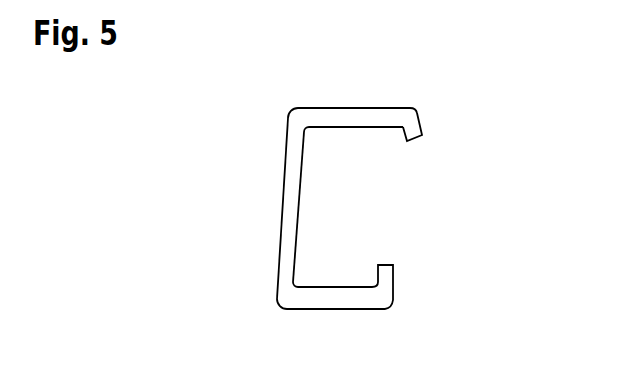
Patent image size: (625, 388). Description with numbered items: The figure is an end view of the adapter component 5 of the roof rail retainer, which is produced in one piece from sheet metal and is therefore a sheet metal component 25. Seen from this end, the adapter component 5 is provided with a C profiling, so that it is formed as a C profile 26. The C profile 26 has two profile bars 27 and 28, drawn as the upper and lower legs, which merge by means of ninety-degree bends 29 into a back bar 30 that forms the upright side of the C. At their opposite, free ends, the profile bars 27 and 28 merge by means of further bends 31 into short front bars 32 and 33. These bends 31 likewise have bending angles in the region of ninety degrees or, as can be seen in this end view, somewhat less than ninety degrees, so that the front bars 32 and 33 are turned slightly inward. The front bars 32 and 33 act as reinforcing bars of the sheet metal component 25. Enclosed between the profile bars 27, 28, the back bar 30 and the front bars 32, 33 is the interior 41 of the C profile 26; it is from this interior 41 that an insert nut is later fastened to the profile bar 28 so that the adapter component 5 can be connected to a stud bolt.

The adapter component 5 is at (357, 200).
The sheet metal component 25 is at (357, 200).
The C profile 26 is at (410, 95).
The profile bar 27 is at (339, 121).
The profile bar 28 is at (318, 300).
The bends 29 is at (302, 124).
The back bar 30 is at (290, 226).
The bends 31 is at (411, 118).
The front bar 32 is at (413, 130).
The front bar 33 is at (385, 272).
The interior 41 is at (352, 232).